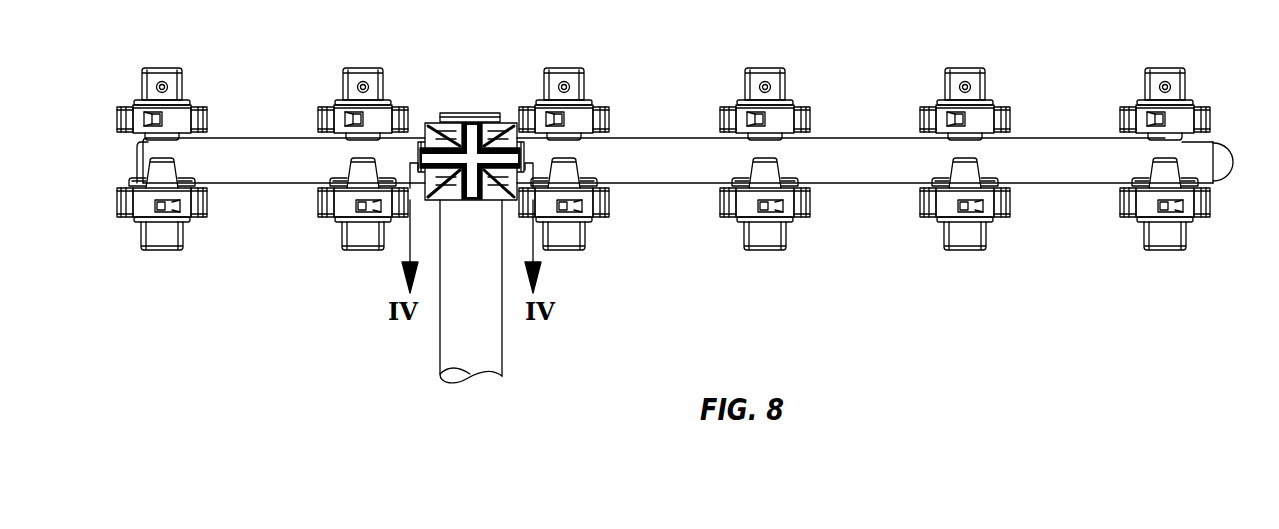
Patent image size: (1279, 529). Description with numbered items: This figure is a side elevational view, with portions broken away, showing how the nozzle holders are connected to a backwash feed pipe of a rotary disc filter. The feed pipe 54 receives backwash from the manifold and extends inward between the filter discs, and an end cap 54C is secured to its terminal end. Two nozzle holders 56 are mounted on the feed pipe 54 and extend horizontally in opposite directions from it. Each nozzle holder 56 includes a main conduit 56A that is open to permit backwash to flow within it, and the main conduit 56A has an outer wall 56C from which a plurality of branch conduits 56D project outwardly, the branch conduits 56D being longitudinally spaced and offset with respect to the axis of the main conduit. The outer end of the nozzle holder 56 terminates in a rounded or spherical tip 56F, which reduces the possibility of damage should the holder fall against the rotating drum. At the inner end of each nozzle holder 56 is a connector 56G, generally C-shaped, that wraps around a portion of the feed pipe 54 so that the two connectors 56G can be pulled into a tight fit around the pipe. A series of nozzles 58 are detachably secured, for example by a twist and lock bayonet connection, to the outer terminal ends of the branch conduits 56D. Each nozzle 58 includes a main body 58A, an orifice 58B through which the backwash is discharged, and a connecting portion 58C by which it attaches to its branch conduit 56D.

The feed pipe 54 is at (452, 334).
The end cap 54C is at (468, 115).
The nozzle holder 56 is at (263, 233).
The main conduit 56A is at (270, 157).
The outer wall 56C is at (658, 138).
The branch conduit 56D is at (968, 177).
The rounded or spherical tip 56F is at (1218, 165).
The connector 56G is at (437, 120).
The nozzle 58 is at (163, 70).
The main body 58A is at (1183, 85).
The orifice 58B is at (1163, 87).
The connecting portion 58C is at (1183, 118).